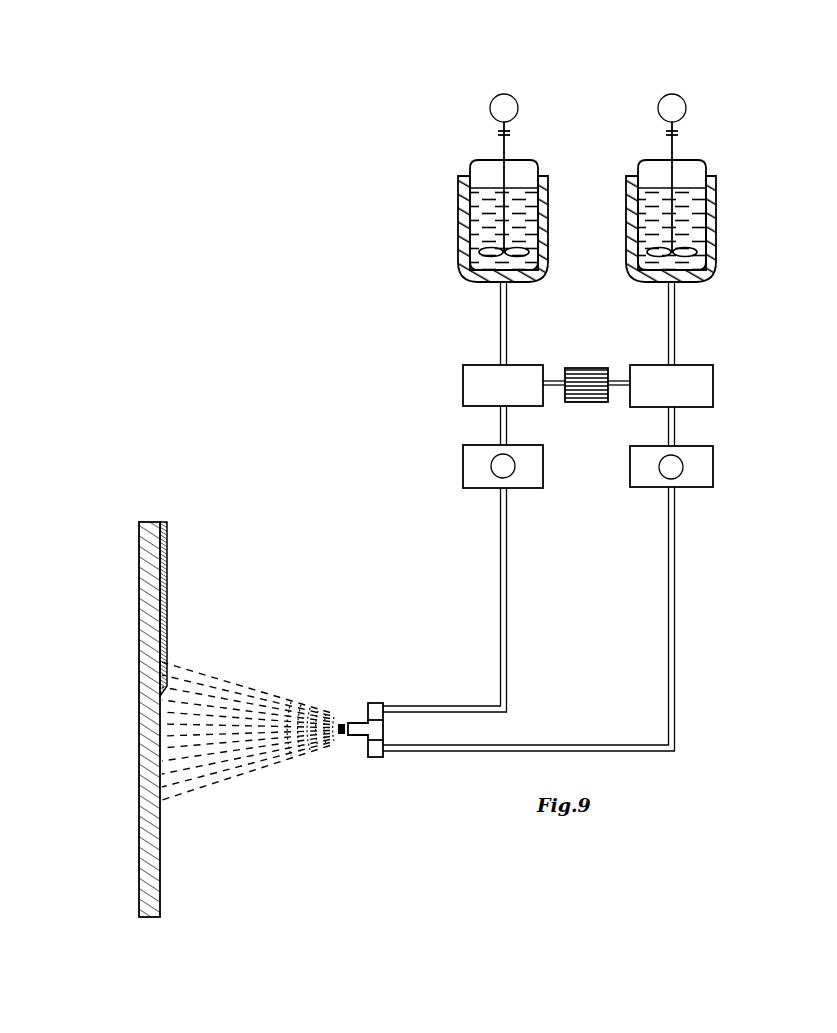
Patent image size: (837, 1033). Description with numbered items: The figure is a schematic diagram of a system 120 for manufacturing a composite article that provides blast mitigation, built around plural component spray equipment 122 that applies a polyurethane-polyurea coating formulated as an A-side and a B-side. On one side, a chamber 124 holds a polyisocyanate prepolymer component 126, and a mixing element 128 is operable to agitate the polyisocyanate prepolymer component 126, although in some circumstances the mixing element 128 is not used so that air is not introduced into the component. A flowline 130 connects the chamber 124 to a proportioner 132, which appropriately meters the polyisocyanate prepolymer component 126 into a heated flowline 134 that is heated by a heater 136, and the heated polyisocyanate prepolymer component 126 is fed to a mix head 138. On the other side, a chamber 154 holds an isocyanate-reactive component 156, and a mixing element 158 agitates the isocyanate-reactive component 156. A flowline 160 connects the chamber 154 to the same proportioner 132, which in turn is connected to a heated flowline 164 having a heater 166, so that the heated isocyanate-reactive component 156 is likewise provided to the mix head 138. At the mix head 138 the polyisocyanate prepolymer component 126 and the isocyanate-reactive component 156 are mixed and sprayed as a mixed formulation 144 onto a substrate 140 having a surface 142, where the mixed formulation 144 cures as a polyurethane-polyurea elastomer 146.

The system for manufacturing a composite article 120 is at (712, 88).
The plural component spray equipment 122 is at (438, 354).
The chamber 124 is at (490, 161).
The polyisocyanate prepolymer component 126 is at (522, 264).
The mixing element 128 is at (500, 213).
The flowline 130 is at (500, 320).
The proportioner 132 is at (583, 403).
The heated flowline 134 is at (500, 556).
The heater 136 is at (463, 467).
The mix head 138 is at (363, 727).
The substrate 140 is at (152, 886).
The surface 142 is at (160, 840).
The mixed formulation 144 is at (228, 772).
The polyurethane-polyurea elastomer 146 is at (168, 546).
The chamber 154 is at (686, 161).
The isocyanate-reactive component 156 is at (657, 264).
The mixing element 158 is at (674, 213).
The flowline 160 is at (676, 320).
The heated flowline 164 is at (676, 556).
The heater 166 is at (713, 467).